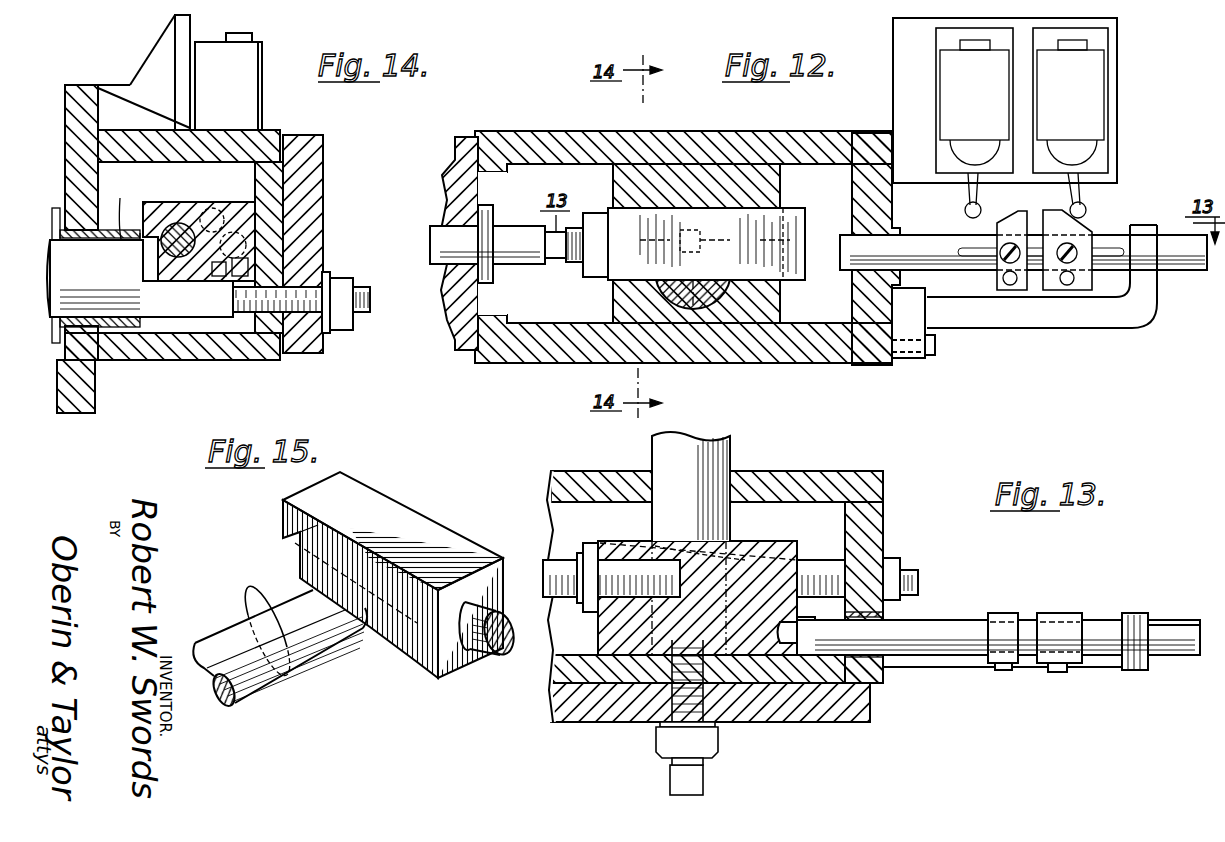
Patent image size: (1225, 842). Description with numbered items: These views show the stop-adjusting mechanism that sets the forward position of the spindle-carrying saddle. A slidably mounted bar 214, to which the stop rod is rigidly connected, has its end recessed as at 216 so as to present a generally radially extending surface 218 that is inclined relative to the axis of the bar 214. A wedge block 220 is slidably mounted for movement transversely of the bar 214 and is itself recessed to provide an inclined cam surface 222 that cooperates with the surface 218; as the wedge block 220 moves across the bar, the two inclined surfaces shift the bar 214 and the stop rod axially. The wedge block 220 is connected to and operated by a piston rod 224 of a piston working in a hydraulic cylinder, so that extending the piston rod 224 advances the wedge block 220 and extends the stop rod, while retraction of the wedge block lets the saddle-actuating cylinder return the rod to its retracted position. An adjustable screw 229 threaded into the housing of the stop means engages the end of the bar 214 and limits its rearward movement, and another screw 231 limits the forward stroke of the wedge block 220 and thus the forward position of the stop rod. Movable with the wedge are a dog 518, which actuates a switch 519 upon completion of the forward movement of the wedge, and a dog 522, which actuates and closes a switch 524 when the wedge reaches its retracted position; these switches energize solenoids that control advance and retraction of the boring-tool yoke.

In FIG. 14, the slidably mounted bar 214 is at (112, 310).
In FIG. 12, the slidably mounted bar 214 is at (703, 305).
In FIG. 13, the slidably mounted bar 214 is at (662, 452).
In FIG. 15, the slidably mounted bar 214 is at (258, 683).
In FIG. 15, the recess 216 is at (323, 623).
In FIG. 14, the radially extending surface 218 is at (128, 210).
In FIG. 13, the radially extending surface 218 is at (677, 545).
In FIG. 15, the radially extending surface 218 is at (265, 612).
In FIG. 14, the wedge block 220 is at (185, 206).
In FIG. 12, the wedge block 220 is at (717, 215).
In FIG. 13, the wedge block 220 is at (597, 645).
In FIG. 15, the wedge block 220 is at (380, 505).
In FIG. 14, the inclined cam surface 222 is at (152, 273).
In FIG. 13, the inclined cam surface 222 is at (822, 562).
In FIG. 15, the inclined cam surface 222 is at (312, 565).
In FIG. 12, the piston rod 224 is at (455, 245).
In FIG. 13, the piston rod 224 is at (550, 562).
In FIG. 15, the piston rod 224 is at (475, 637).
In FIG. 14, the adjustable screw 229 is at (293, 330).
In FIG. 13, the adjustable screw 229 is at (668, 767).
In FIG. 13, the screw 231 is at (884, 556).
In FIG. 12, the dog 518 is at (1077, 292).
In FIG. 12, the switch 519 is at (1085, 80).
In FIG. 12, the dog 522 is at (1022, 292).
In FIG. 12, the switch 524 is at (950, 76).